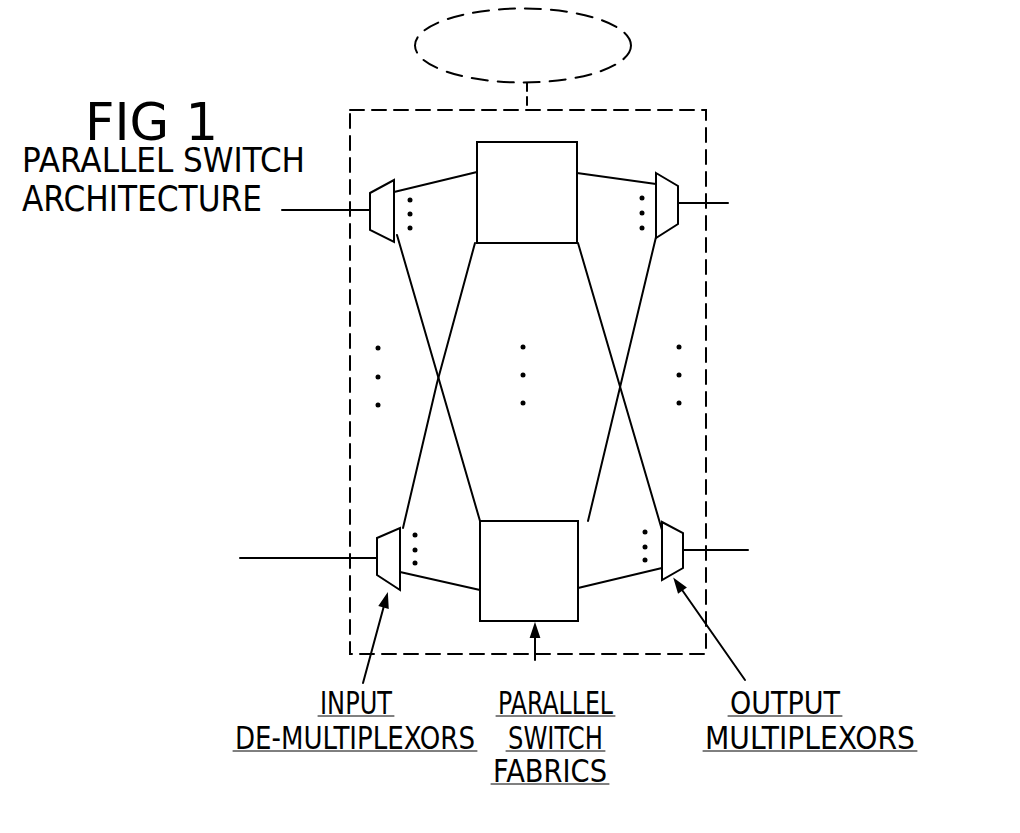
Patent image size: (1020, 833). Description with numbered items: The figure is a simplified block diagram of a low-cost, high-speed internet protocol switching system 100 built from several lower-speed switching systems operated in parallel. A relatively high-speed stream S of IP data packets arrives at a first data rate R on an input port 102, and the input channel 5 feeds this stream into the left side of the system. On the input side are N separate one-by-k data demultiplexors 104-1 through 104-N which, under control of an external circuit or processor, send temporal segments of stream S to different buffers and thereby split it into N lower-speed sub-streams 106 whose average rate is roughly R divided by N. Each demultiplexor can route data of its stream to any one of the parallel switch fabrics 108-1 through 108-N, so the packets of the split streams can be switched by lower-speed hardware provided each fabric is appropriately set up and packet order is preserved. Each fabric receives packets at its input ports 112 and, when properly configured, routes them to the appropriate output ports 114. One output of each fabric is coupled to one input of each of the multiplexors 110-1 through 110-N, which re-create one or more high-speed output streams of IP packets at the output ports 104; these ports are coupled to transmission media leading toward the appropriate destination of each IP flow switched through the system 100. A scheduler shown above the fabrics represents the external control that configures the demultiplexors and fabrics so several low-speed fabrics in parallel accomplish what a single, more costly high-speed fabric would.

The switching system 100 is at (166, 253).
The input port 102 is at (326, 222).
The input channel 5 is at (297, 213).
The data demultiplexor 104-1 is at (373, 243).
The data demultiplexor 104-N is at (377, 573).
The output port 104 is at (766, 512).
The split streams 106 is at (442, 179).
The switch fabric 108-1 is at (558, 158).
The switch fabric 108-N is at (574, 600).
The multiplexor 110-1 is at (674, 187).
The multiplexor 110-N is at (683, 566).
The input port of switch fabric 112 is at (477, 170).
The output port of switch fabric 114 is at (583, 173).